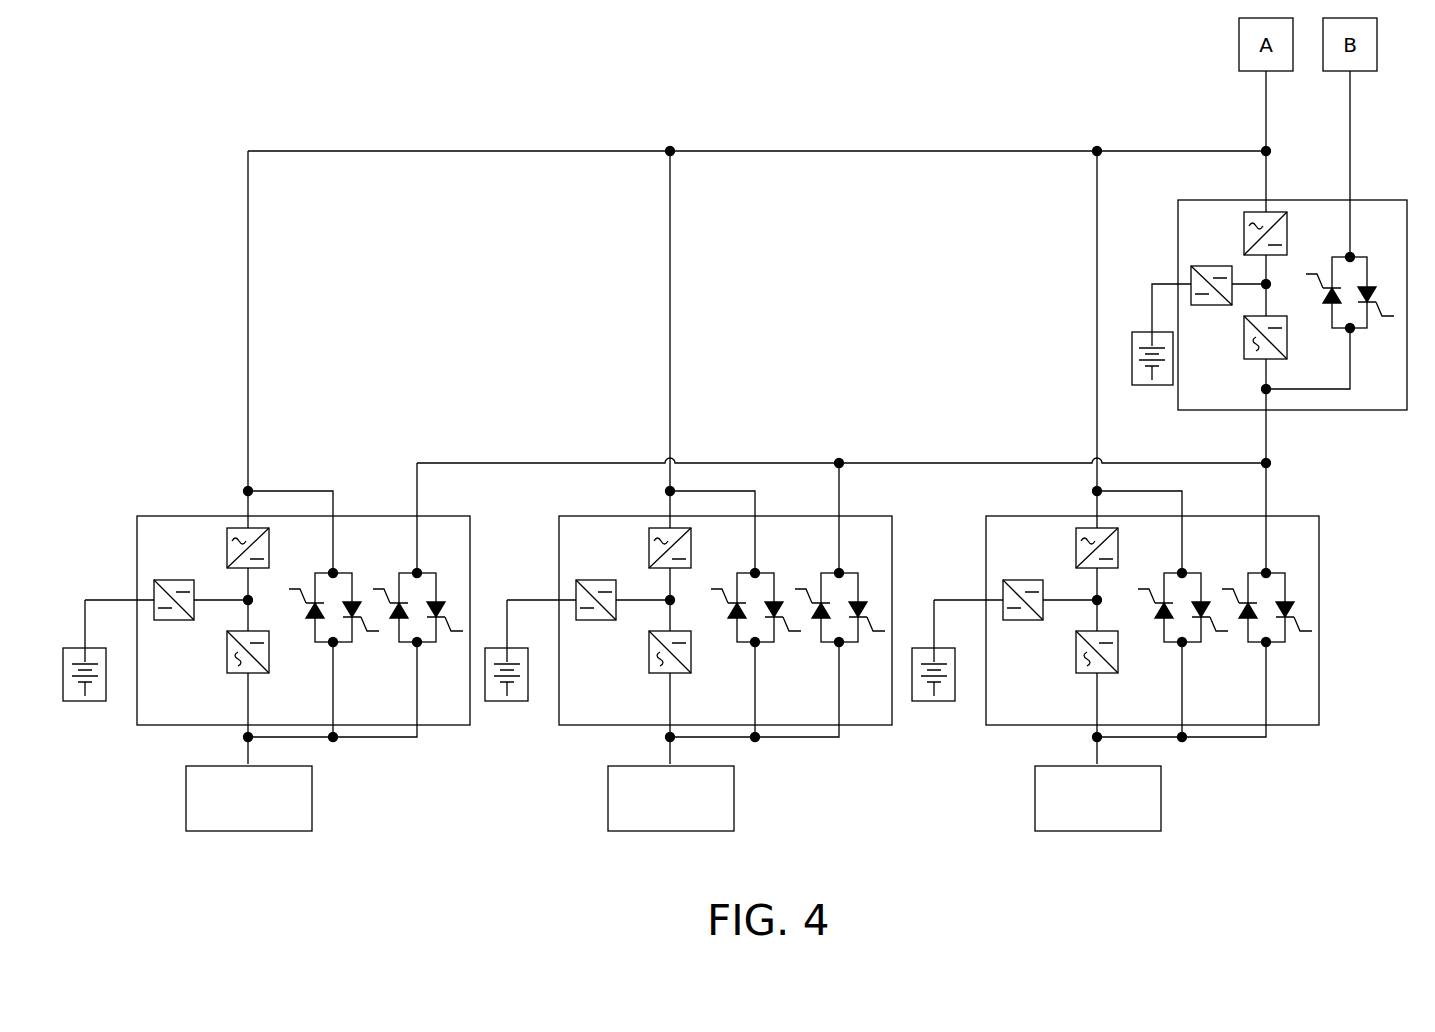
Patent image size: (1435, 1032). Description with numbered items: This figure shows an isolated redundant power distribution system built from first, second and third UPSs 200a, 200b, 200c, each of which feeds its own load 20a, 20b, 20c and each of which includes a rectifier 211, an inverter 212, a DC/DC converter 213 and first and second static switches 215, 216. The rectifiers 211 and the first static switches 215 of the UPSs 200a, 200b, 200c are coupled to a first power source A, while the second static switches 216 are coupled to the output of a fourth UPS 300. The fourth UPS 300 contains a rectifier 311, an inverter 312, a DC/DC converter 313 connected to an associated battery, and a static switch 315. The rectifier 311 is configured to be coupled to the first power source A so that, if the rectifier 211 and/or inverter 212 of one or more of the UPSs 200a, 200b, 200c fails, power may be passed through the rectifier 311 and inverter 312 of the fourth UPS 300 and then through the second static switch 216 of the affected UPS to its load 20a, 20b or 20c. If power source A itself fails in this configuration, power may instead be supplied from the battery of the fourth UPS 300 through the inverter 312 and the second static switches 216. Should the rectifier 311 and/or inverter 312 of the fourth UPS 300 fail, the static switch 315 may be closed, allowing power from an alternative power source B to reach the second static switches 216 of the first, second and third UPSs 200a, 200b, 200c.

The first UPS 200a is at (486, 505).
The second UPS 200b is at (884, 500).
The third UPS 200c is at (1313, 492).
The rectifier 211 is at (227, 548).
The inverter 212 is at (227, 652).
The DC/DC converter 213 is at (174, 620).
The first static switch 215 is at (322, 668).
The second static switch 216 is at (403, 668).
The first load 20a is at (248, 831).
The second load 20b is at (680, 817).
The third load 20c is at (1106, 817).
The fourth UPS 300 is at (1277, 324).
The rectifier 311 is at (1244, 233).
The inverter 312 is at (1244, 338).
The DC/DC converter 313 is at (1198, 305).
The static switch 315 is at (1328, 355).